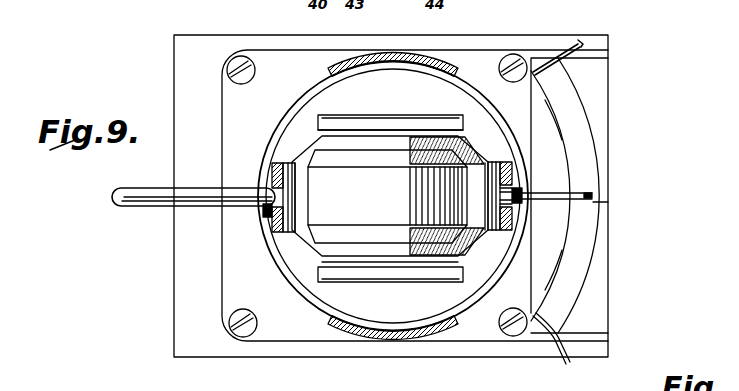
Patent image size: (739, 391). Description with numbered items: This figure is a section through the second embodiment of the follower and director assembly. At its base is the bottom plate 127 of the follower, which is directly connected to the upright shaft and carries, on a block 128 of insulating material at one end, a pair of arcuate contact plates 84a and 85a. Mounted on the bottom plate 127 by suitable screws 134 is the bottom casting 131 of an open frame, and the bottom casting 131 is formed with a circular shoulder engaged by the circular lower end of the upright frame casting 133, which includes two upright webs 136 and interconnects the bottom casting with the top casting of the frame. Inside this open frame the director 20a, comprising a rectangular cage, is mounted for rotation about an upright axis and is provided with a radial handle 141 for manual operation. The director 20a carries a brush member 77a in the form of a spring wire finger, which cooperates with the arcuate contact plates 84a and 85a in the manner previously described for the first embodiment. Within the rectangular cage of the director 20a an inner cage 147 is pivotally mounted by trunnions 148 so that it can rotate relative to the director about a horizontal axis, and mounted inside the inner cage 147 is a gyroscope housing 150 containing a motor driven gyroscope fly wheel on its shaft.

The bottom plate 127 is at (174, 61).
The bottom casting 131 is at (224, 163).
The frame casting 133 is at (270, 256).
The screws 134 is at (238, 60).
The upright webs 136 is at (396, 52).
The radial handle 141 is at (134, 187).
The inner cage 147 is at (351, 116).
The trunnions 148 is at (272, 210).
The gyroscope housing 150 is at (387, 196).
The director 20a is at (306, 107).
The arcuate contact plate 84a is at (586, 130).
The arcuate contact plate 85a is at (587, 256).
The block of insulating material 128 is at (607, 165).
The brush member 77a is at (546, 199).